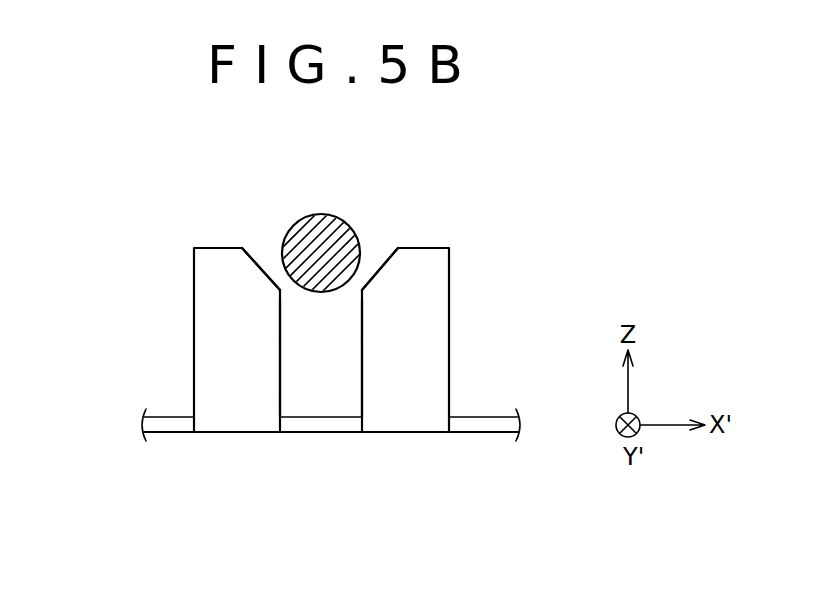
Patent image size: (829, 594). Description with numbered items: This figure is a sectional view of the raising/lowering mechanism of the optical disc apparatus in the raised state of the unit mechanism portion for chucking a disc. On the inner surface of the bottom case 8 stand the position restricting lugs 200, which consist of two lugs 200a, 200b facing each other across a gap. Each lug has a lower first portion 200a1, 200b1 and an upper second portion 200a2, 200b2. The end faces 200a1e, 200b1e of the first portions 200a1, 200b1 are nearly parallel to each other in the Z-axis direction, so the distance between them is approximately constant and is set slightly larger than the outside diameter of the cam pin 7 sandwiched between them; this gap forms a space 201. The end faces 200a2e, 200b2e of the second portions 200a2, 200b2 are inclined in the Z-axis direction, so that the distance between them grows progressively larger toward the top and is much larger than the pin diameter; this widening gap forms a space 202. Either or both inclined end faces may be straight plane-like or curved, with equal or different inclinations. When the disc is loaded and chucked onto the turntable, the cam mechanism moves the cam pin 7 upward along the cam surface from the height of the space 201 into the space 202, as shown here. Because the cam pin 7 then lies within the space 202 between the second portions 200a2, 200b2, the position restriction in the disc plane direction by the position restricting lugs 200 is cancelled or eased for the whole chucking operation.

The cam pin 7 is at (318, 216).
The bottom case 8 is at (485, 425).
The position restricting lugs 200 is at (432, 417).
The lug 200a is at (223, 333).
The first portion 200a1 is at (223, 395).
The second portion 200a2 is at (223, 272).
The end face of the first portion 200a1e is at (283, 365).
The end face of the second portion 200a2e is at (257, 247).
The lug 200b is at (418, 345).
The first portion 200b1 is at (418, 395).
The second portion 200b2 is at (418, 272).
The end face of the first portion 200b1e is at (360, 365).
The end face of the second portion 200b2e is at (387, 250).
The space 201 is at (380, 330).
The space 202 is at (368, 250).